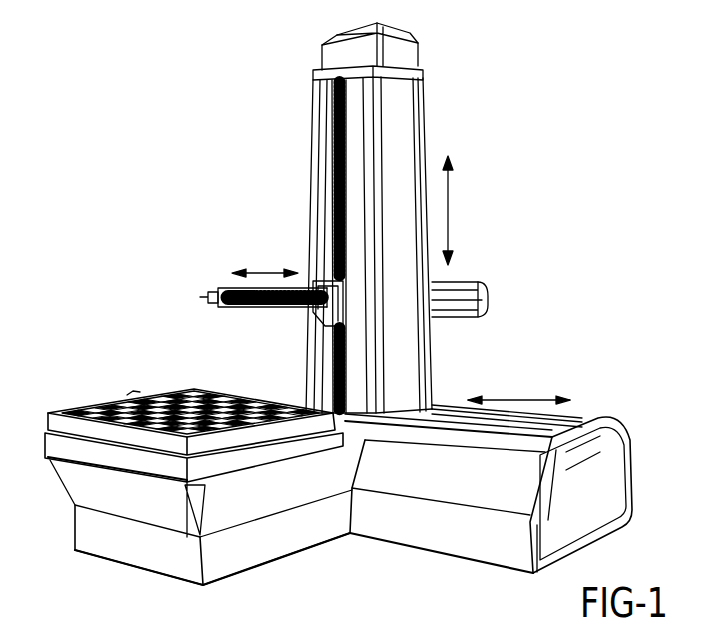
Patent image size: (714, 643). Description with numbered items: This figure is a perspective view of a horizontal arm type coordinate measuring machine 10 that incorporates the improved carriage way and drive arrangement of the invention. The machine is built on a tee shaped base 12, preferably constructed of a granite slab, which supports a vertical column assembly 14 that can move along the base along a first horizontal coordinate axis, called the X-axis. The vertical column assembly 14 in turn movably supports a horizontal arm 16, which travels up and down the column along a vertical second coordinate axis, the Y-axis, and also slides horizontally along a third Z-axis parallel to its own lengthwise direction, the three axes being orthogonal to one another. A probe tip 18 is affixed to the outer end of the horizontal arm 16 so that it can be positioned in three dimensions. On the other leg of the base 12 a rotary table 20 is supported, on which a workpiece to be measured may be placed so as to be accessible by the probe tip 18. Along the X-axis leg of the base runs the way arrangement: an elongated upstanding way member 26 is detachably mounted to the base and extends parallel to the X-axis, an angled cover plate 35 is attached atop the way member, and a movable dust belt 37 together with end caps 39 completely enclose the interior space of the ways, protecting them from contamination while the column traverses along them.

The coordinate measuring machine 10 is at (560, 232).
The base 12 is at (344, 543).
The vertical column assembly 14 is at (479, 117).
The horizontal arm 16 is at (263, 309).
The probe tip 18 is at (206, 296).
The rotary table 20 is at (112, 422).
The way member 26 is at (508, 493).
The angled cover plate 35 is at (441, 438).
The dust belt 37 is at (556, 424).
The end caps 39 is at (612, 469).